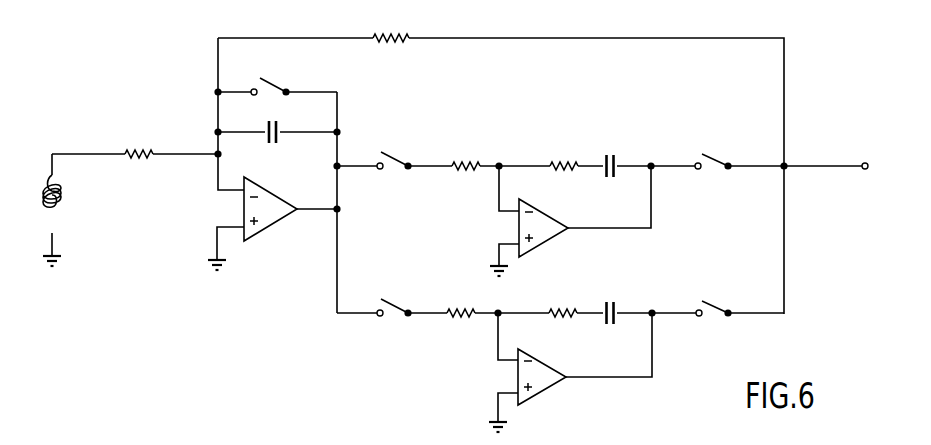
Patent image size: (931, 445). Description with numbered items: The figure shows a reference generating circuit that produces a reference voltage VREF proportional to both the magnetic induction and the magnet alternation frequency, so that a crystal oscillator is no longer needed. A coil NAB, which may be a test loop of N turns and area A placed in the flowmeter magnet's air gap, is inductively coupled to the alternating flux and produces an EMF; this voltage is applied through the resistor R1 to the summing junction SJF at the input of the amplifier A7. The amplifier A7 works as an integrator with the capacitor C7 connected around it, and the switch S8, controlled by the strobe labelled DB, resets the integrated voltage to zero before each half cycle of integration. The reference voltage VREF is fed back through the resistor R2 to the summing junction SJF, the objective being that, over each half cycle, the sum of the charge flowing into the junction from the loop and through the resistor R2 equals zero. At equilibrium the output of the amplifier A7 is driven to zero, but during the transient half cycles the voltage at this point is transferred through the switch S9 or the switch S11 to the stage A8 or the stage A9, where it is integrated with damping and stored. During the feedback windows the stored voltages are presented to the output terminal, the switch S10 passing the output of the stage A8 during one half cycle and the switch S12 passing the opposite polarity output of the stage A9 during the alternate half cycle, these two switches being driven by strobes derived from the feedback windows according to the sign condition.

The resistor R1 is at (135, 142).
The resistor R2 is at (501, 160).
The capacitor C7 is at (277, 140).
The switch S8 is at (277, 75).
The switch S9 is at (394, 177).
The switch S10 is at (713, 178).
The switch S11 is at (392, 324).
The switch S12 is at (721, 326).
The amplifier A7 is at (272, 212).
The amplifier A8 is at (570, 221).
The amplifier A9 is at (570, 372).
The coil NAB is at (70, 210).
The summing junction SJF is at (198, 176).
The reference voltage VREF is at (886, 165).